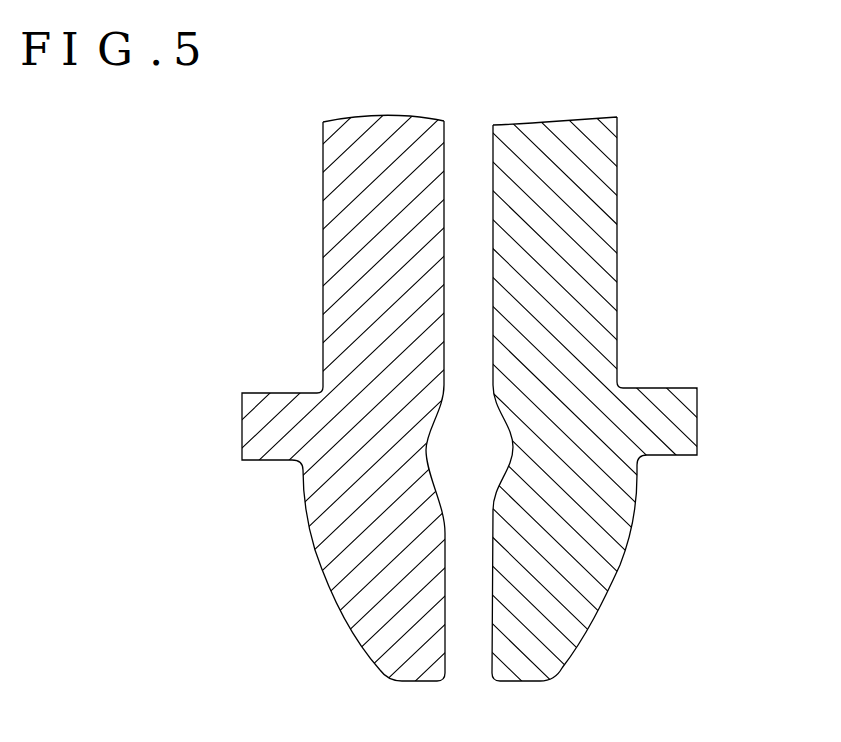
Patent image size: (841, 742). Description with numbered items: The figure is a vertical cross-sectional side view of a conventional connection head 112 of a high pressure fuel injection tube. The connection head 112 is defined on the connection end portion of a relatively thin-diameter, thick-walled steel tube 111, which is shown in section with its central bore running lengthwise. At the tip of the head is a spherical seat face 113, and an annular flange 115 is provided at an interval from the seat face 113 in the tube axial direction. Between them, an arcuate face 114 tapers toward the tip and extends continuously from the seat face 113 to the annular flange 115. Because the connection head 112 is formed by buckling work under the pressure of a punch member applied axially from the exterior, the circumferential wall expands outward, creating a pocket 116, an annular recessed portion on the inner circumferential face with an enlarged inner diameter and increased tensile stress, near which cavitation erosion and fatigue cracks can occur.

The thick-walled steel tube 111 is at (333, 235).
The connection head 112 is at (411, 371).
The spherical seat face 113 is at (368, 668).
The arcuate face 114 is at (308, 550).
The annular flange 115 is at (252, 433).
The pocket 116 is at (497, 503).